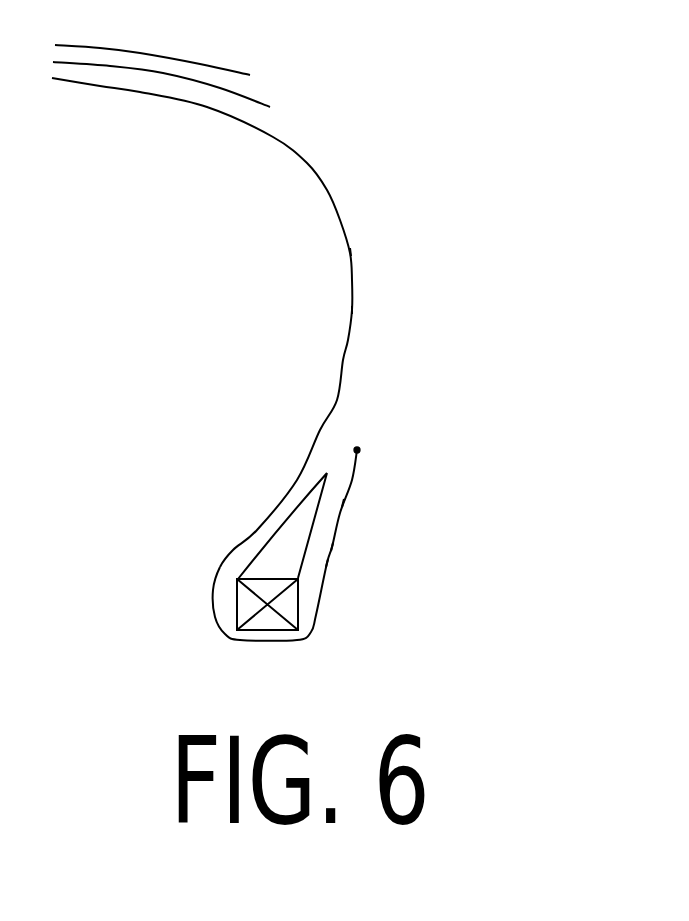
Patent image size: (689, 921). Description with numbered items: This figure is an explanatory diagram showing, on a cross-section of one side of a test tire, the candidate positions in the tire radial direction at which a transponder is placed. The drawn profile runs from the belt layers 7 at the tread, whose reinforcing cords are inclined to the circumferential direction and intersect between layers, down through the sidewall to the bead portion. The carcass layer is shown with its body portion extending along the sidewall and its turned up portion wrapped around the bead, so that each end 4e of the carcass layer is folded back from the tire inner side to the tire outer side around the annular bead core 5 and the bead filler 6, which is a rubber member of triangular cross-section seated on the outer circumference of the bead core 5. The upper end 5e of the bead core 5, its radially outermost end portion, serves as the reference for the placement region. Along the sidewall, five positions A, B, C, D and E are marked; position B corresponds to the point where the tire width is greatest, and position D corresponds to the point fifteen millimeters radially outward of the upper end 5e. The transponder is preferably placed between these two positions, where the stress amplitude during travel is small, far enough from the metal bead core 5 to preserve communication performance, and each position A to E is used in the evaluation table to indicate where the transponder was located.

The end of carcass layer 4e is at (357, 450).
The bead core 5 is at (250, 606).
The upper end of bead core 5e is at (262, 579).
The bead filler 6 is at (295, 532).
The belt layers 7 is at (163, 73).
The position A is at (353, 252).
The position B is at (353, 310).
The position C is at (353, 503).
The position D is at (333, 547).
The position E is at (333, 563).